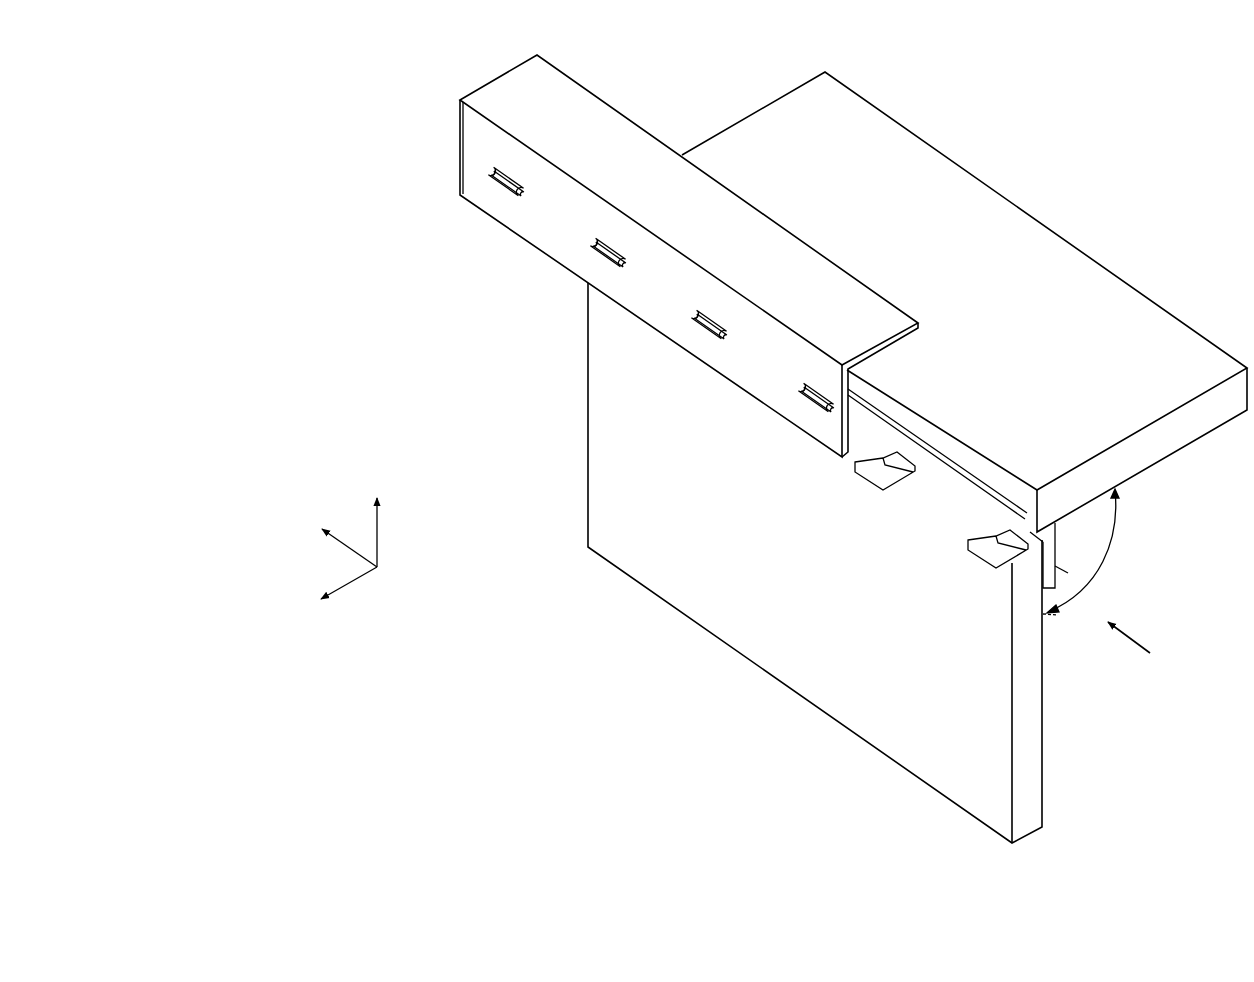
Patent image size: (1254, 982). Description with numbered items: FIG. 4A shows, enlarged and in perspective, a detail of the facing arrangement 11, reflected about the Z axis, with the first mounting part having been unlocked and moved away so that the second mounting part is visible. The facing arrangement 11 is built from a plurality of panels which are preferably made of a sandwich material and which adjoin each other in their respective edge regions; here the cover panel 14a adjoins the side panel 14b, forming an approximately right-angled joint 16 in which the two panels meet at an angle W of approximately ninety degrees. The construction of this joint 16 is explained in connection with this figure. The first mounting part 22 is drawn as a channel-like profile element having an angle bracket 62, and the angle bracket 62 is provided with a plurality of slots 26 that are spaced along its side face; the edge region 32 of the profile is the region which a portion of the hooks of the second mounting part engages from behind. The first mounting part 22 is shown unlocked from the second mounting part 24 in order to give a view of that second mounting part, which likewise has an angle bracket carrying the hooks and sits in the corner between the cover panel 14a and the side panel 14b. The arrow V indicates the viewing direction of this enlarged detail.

The facing arrangement 11 is at (360, 120).
The angle bracket 62 is at (505, 71).
The first mounting part 22 is at (622, 147).
The slots 26 is at (504, 186).
The edge region 32 is at (655, 303).
The cover panel 14a is at (1162, 332).
The side panel 14b is at (1030, 760).
The joint 16 is at (1100, 549).
The second mounting part 24 is at (1072, 574).
The angle W is at (1117, 518).
The viewing direction V is at (1144, 648).